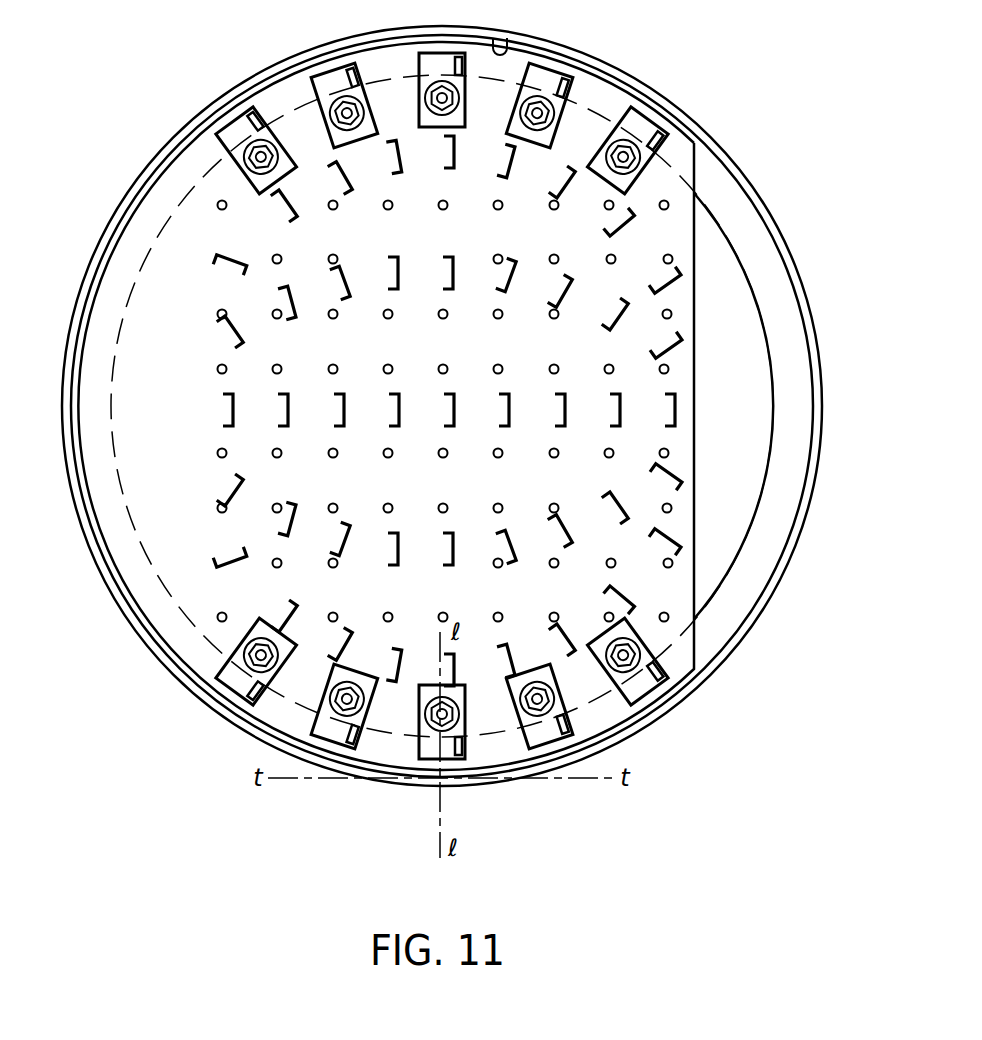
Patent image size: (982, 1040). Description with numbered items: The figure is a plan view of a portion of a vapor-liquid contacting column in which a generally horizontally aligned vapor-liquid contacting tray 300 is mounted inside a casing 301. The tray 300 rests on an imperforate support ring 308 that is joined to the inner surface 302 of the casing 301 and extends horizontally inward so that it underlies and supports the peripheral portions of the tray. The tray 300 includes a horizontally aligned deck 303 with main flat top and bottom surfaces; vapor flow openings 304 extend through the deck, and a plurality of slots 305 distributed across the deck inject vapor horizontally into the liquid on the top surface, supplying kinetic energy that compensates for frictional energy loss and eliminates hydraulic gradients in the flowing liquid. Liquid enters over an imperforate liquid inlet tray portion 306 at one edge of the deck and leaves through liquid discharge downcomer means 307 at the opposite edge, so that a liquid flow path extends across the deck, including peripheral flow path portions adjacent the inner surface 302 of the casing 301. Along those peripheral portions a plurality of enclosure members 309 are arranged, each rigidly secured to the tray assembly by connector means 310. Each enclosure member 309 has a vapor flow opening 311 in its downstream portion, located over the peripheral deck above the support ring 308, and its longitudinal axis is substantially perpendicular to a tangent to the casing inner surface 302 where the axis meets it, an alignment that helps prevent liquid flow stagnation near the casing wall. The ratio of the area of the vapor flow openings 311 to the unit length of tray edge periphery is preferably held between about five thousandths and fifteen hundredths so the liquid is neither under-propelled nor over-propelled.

The vapor-liquid contacting tray 300 is at (300, 122).
The casing 301 is at (589, 60).
The inner surface 302 is at (502, 52).
The deck 303 is at (384, 97).
The vapor flow openings 304 is at (669, 369).
The slots 305 is at (675, 426).
The imperforate liquid inlet tray portion 306 is at (147, 333).
The liquid discharge downcomer means 307 is at (740, 300).
The imperforate support ring 308 is at (740, 212).
The enclosure members 309 is at (534, 692).
The connector means 310 is at (532, 692).
The vapor flow openings 311 is at (573, 722).